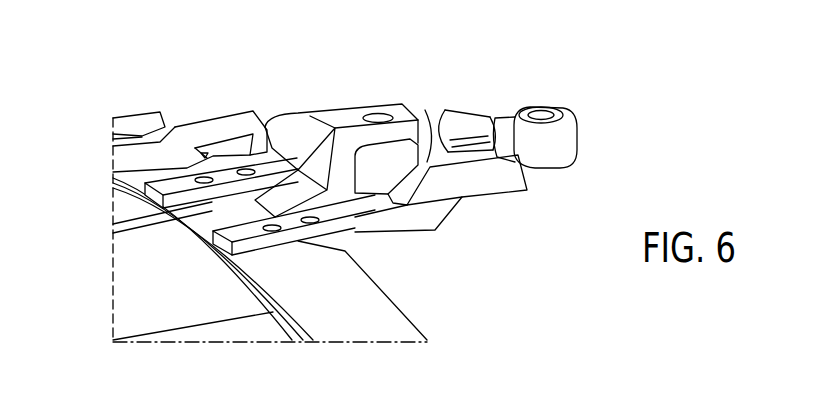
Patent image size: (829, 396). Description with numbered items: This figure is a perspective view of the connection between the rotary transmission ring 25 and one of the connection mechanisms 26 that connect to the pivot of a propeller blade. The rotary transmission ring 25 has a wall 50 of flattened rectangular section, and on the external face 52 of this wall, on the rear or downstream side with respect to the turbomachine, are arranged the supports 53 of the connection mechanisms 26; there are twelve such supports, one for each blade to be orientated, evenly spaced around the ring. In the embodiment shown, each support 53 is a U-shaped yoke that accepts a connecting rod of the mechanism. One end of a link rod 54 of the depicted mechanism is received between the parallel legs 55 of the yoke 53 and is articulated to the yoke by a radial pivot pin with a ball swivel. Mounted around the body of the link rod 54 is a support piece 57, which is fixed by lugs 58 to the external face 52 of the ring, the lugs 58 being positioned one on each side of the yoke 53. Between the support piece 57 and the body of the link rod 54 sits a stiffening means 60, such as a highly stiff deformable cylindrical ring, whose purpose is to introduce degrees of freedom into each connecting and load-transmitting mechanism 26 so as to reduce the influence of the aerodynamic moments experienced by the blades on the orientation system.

The rotary transmission ring 25 is at (407, 310).
The connection mechanism 26 is at (580, 117).
The wall 50 is at (348, 318).
The external face 52 is at (213, 223).
The support 53 is at (338, 115).
The link rod 54 is at (510, 115).
The parallel legs 55 is at (386, 137).
The support piece 57 is at (487, 182).
The lugs 58 is at (145, 183).
The stiffening means 60 is at (470, 127).